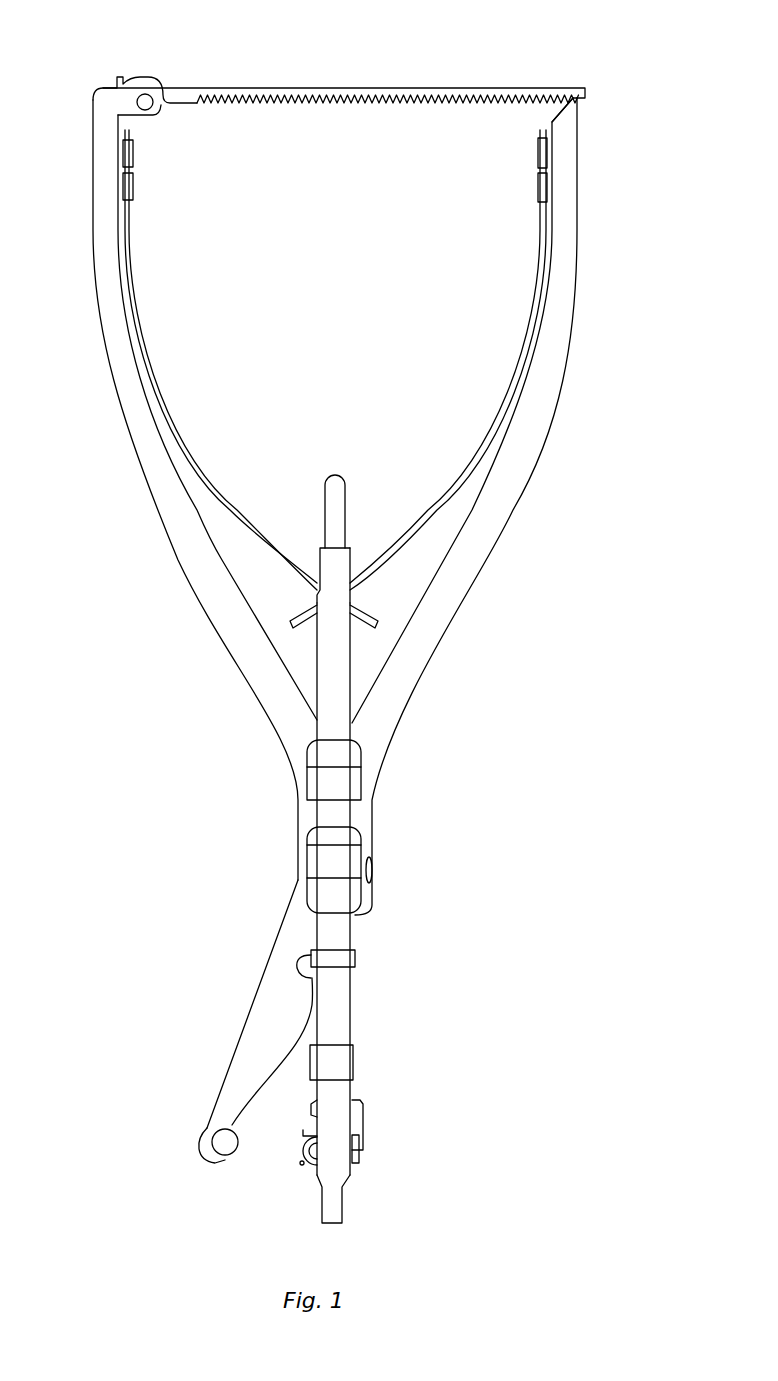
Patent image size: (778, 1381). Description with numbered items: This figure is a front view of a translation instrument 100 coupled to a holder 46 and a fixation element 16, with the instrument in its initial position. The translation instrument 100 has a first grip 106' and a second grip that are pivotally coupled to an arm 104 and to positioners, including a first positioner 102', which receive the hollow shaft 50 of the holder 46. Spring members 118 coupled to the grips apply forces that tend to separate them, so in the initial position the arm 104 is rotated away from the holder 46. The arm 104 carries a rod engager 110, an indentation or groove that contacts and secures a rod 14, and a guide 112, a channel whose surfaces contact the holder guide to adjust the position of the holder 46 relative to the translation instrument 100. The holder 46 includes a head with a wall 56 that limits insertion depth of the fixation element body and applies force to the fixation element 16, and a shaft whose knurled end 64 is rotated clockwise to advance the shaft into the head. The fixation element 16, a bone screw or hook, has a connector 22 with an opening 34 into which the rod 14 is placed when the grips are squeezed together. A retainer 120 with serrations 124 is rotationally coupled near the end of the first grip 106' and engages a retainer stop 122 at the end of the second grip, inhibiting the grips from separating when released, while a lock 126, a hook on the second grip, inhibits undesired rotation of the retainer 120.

The translation instrument 100 is at (560, 43).
The retainer 120 is at (313, 92).
The serrations 124 is at (347, 100).
The retainer stop 122 is at (577, 113).
The lock 126 is at (563, 138).
The first grip 106' is at (163, 490).
The spring members 118 is at (173, 412).
The end of the shaft 64 is at (343, 495).
The hollow shaft 50 is at (352, 663).
The holder 46 is at (338, 698).
The first positioner 102' is at (384, 777).
The guide 112 is at (302, 958).
The arm 104 is at (272, 1008).
The rod 14 is at (220, 1140).
The rod engager 110 is at (218, 1163).
The opening 34 is at (303, 1167).
The wall 56 is at (365, 1118).
The connector 22 is at (358, 1158).
The fixation element 16 is at (330, 1198).